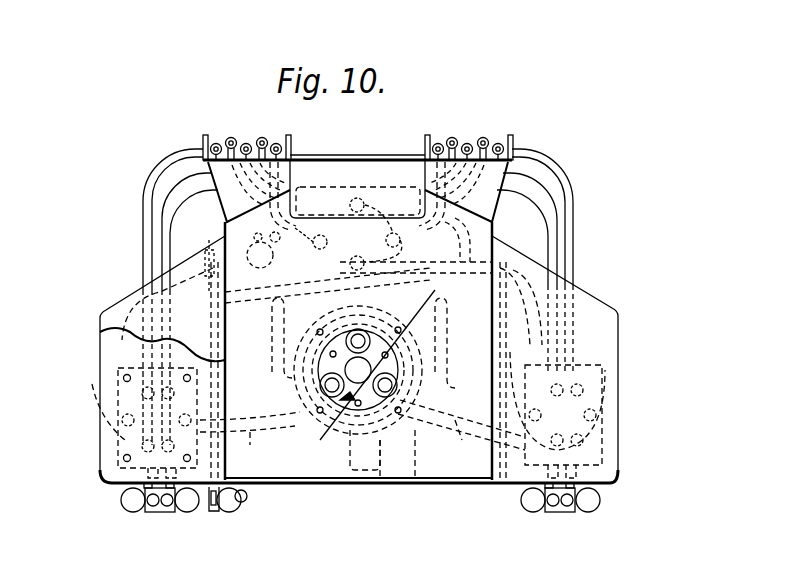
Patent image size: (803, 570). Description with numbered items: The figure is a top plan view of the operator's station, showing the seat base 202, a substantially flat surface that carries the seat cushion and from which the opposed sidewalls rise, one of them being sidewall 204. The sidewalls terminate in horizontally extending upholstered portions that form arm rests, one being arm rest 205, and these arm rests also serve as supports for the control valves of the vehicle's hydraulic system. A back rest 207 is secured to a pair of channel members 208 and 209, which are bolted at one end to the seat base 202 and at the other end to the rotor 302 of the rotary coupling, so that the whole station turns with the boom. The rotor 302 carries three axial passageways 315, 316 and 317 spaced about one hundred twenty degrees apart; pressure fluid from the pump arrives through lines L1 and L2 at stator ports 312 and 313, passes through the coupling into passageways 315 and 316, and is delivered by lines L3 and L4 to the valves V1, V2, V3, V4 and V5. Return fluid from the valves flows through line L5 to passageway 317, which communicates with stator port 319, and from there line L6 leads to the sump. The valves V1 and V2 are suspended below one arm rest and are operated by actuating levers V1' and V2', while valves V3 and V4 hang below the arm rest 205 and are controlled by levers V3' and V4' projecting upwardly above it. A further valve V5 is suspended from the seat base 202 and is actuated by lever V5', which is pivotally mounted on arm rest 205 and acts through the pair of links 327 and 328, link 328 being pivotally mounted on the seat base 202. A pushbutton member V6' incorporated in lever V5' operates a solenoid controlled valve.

The base 202 is at (322, 482).
The sidewall 204 is at (585, 296).
The horizontally extending portion (arm rest) 205 is at (128, 310).
The back rest 207 is at (366, 160).
The channel member 208 is at (514, 140).
The channel member 209 is at (207, 136).
The rotor 302 is at (348, 405).
The port 312 is at (300, 380).
The port 313 is at (425, 388).
The axial passageway 315 is at (452, 297).
The axial passageway 316 is at (338, 405).
The axial passageway 317 is at (341, 335).
The port 319 is at (380, 480).
The link 327 is at (158, 263).
The link 328 is at (225, 246).
The line L1 is at (277, 338).
The line L2 is at (440, 346).
The line L3 is at (463, 433).
The line L4 is at (262, 430).
The line L5 is at (447, 263).
The line L6 is at (415, 480).
The valve V1 is at (598, 376).
The valve V2 is at (553, 405).
The valve V3 is at (162, 401).
The valve V4 is at (127, 412).
The valve V5 is at (348, 193).
The actuating lever V1' is at (579, 517).
The actuating lever V2' is at (539, 514).
The lever V3' is at (177, 517).
The lever V4' is at (137, 514).
The lever V5' is at (223, 516).
The pushbutton member V6' is at (261, 511).